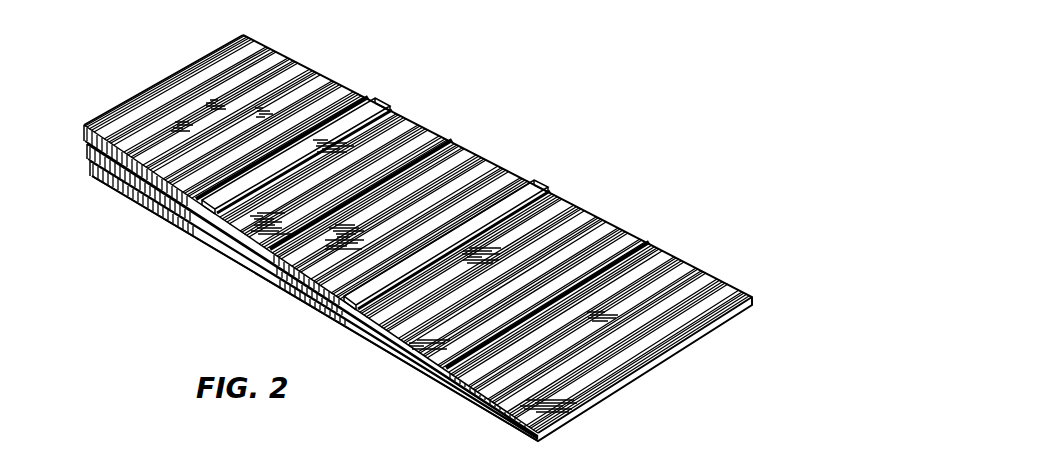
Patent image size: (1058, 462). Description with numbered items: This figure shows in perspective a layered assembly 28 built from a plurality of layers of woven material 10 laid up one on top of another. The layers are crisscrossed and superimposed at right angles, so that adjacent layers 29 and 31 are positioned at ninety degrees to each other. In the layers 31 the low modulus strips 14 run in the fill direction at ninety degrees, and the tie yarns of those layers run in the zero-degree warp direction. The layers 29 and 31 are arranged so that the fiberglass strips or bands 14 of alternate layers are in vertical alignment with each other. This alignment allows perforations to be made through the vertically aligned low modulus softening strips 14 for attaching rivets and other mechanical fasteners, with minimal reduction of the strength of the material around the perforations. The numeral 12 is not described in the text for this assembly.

The woven material 10 is at (458, 111).
The strip layer 12 is at (172, 127).
The low modulus strips 14 is at (386, 130).
The layered assembly 28 is at (600, 194).
The layers 29 is at (262, 42).
The layers 31 is at (381, 94).